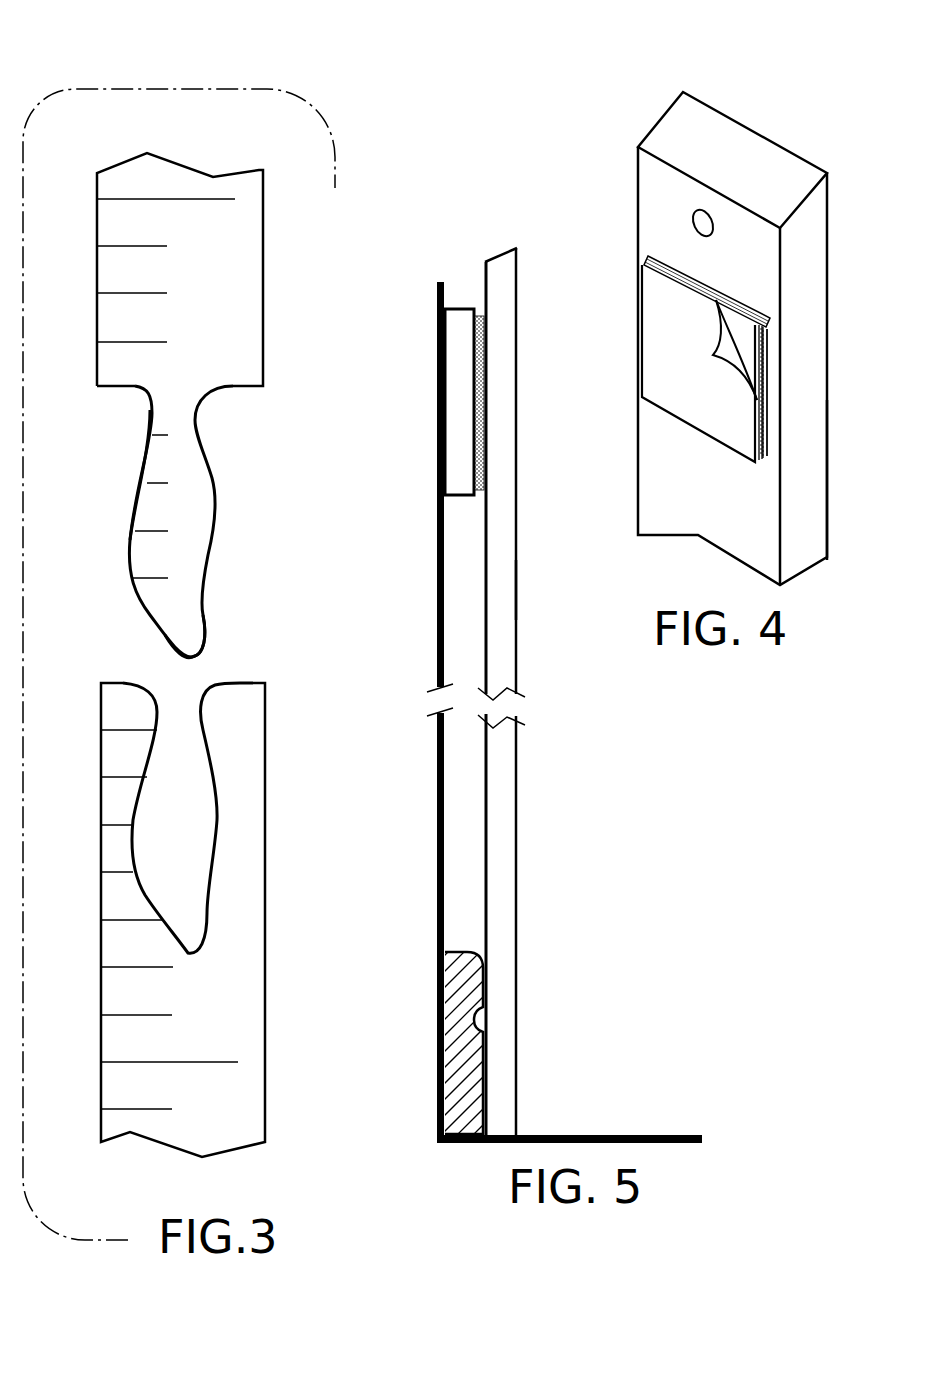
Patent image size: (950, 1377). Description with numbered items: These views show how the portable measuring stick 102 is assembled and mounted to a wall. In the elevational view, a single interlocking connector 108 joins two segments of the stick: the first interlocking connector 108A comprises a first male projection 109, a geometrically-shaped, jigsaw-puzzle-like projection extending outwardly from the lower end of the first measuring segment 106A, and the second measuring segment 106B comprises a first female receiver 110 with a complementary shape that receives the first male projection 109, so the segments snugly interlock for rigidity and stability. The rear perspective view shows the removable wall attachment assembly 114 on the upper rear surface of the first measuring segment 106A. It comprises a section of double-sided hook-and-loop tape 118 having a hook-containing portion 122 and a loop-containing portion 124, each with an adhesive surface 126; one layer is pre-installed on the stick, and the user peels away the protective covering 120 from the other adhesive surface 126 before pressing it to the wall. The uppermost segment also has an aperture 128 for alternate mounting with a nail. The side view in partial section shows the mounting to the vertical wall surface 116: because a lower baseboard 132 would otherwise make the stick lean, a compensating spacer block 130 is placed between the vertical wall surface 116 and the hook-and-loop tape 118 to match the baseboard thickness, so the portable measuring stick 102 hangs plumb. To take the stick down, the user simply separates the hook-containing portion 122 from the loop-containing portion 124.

In FIG. 3, the portable measuring stick 102 is at (385, 242).
In FIG. 5, the portable measuring stick 102 is at (608, 815).
In FIG. 4, the portable measuring stick 102 is at (622, 97).
In FIG. 3, the first measuring segment 106A is at (262, 357).
In FIG. 5, the first measuring segment 106A is at (527, 589).
In FIG. 4, the first measuring segment 106A is at (652, 205).
In FIG. 3, the second measuring segment 106B is at (266, 910).
In FIG. 3, the interlocking connector 108 is at (288, 545).
In FIG. 3, the first interlocking connector 108A is at (280, 471).
In FIG. 3, the first male projection 109 is at (203, 613).
In FIG. 3, the first female receiver 110 is at (170, 800).
In FIG. 5, the removable wall attachment assembly 114 is at (620, 343).
In FIG. 5, the vertical wall surface 116 is at (437, 814).
In FIG. 5, the double-sided hook-and-loop tape 118 is at (486, 428).
In FIG. 4, the double-sided hook-and-loop tape 118 is at (783, 483).
In FIG. 4, the protective covering 120 is at (697, 403).
In FIG. 4, the hook-containing portion 122 is at (648, 262).
In FIG. 4, the loop-containing portion 124 is at (763, 327).
In FIG. 4, the adhesive surface 126 is at (745, 305).
In FIG. 4, the aperture 128 is at (712, 212).
In FIG. 5, the compensating spacer block 130 is at (455, 309).
In FIG. 5, the baseboard 132 is at (470, 952).